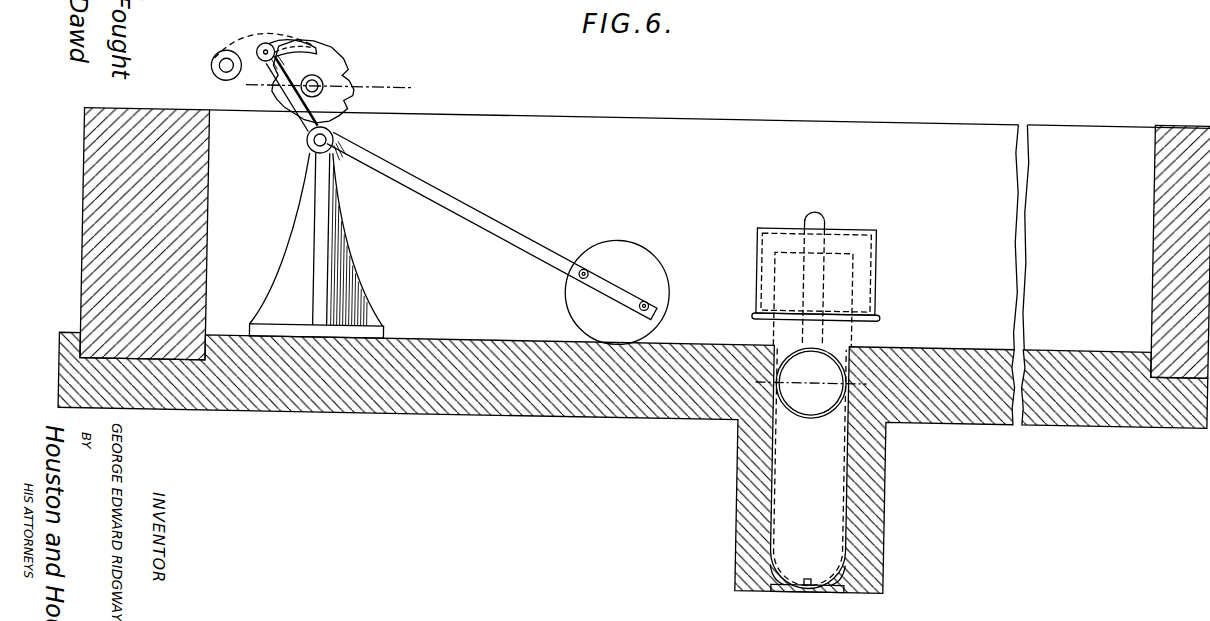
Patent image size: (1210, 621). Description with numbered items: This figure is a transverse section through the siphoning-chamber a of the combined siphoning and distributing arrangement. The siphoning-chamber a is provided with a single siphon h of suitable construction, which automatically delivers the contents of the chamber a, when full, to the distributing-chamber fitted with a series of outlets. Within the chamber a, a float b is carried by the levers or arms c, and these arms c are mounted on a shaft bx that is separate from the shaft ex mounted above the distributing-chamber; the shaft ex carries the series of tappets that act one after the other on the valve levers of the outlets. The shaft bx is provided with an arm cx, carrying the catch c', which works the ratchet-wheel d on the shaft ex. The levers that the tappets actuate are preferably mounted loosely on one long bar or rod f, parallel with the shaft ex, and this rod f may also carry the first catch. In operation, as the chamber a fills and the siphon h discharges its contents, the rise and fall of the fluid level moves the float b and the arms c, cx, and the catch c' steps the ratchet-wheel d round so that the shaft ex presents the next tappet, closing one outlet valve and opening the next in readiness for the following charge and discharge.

The siphoning-chamber a is at (211, 293).
The float b is at (617, 293).
The levers or arms c is at (492, 226).
The ratchet-wheel d is at (349, 76).
The siphon h is at (814, 402).
The bar or rod f is at (210, 67).
The catch c' is at (265, 34).
The arm cx is at (297, 108).
The shaft bx is at (334, 139).
The shaft ex is at (318, 76).